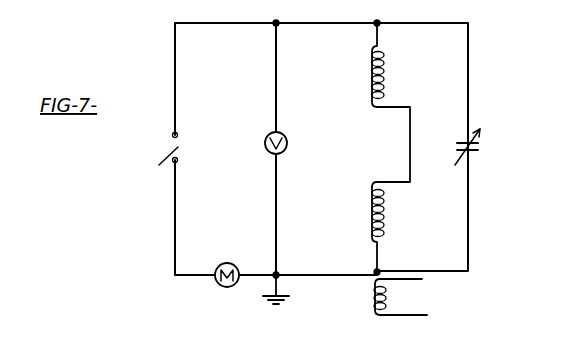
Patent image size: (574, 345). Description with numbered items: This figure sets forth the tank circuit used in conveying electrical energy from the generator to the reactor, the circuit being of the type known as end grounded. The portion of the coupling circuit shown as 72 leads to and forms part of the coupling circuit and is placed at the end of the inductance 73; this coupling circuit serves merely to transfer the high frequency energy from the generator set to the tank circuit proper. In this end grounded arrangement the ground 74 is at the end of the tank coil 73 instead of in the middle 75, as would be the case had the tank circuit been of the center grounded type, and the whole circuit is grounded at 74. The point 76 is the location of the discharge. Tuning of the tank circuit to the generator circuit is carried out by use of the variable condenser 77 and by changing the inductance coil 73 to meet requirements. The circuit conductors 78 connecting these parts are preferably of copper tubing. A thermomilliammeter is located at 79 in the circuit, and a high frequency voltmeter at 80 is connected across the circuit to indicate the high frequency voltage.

The coupling circuit portion 72 is at (365, 298).
The tank coil 73 is at (388, 70).
The ground 74 is at (266, 304).
The middle of the tank coil 75 is at (412, 145).
The discharge point 76 is at (151, 159).
The variable condenser 77 is at (484, 152).
The circuit conductors 78 is at (313, 271).
The thermomilliammeter 79 is at (243, 250).
The high frequency voltmeter 80 is at (288, 143).